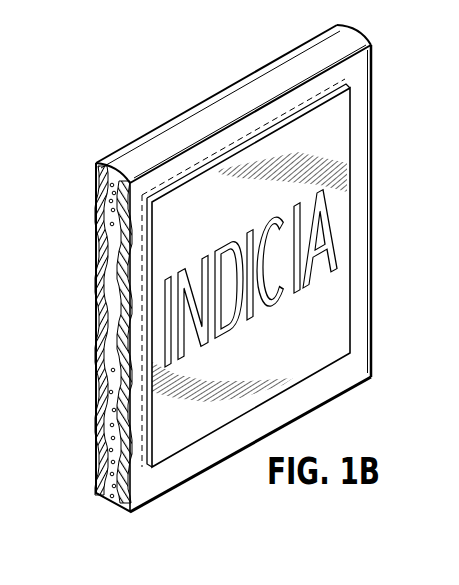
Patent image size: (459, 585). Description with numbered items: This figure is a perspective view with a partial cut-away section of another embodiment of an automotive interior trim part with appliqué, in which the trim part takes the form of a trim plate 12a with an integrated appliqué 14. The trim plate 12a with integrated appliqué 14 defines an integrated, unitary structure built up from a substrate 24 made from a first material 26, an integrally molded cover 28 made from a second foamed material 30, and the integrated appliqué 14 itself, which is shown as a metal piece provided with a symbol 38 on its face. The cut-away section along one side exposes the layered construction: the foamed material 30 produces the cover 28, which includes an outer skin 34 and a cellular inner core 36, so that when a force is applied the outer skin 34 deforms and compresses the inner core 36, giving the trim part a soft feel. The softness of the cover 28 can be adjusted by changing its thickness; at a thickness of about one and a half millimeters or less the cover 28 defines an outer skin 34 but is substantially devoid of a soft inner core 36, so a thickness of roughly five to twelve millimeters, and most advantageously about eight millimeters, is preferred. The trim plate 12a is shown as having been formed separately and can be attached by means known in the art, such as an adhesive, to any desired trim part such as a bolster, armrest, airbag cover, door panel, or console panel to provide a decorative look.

The trim plate 12a is at (383, 147).
The integrated appliqué 14 is at (341, 336).
The substrate 24 is at (120, 150).
The first material 26 is at (100, 181).
The cover 28 is at (360, 203).
The foamed material 30 is at (113, 504).
The outer skin 34 is at (116, 428).
The inner core 36 is at (94, 470).
The symbol 38 is at (334, 252).